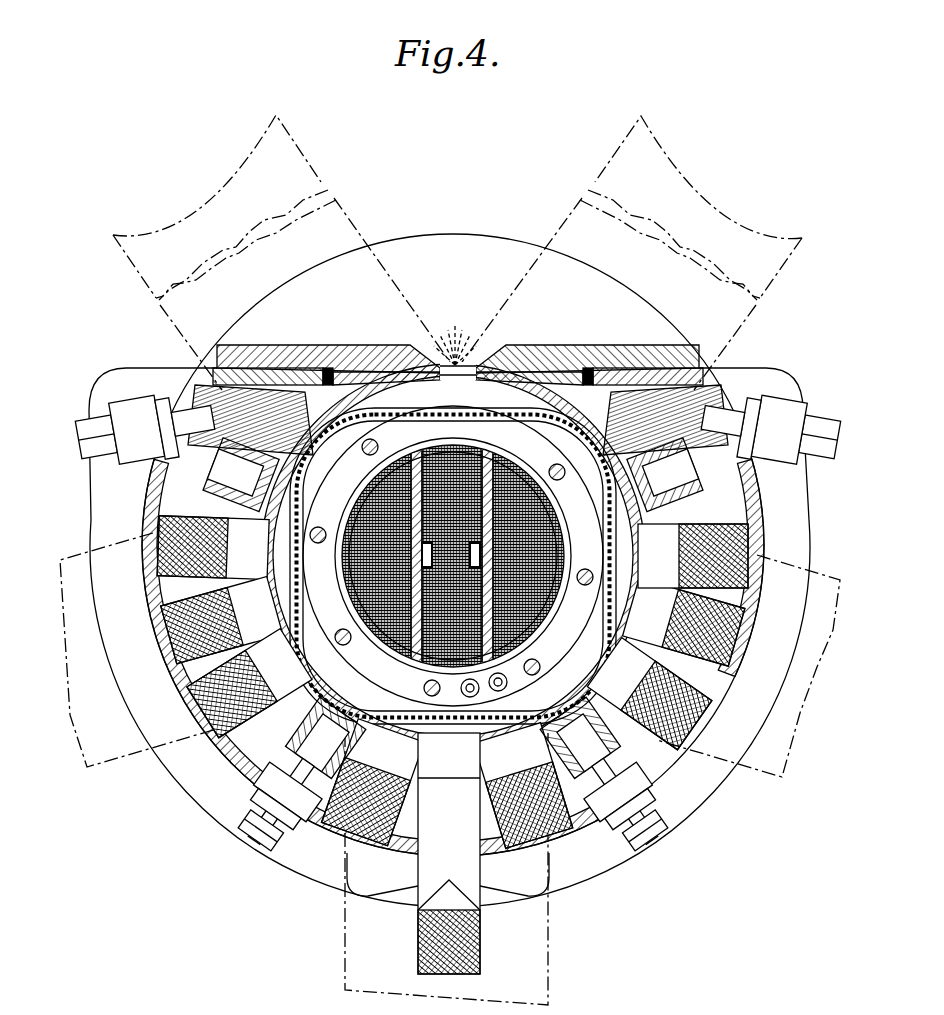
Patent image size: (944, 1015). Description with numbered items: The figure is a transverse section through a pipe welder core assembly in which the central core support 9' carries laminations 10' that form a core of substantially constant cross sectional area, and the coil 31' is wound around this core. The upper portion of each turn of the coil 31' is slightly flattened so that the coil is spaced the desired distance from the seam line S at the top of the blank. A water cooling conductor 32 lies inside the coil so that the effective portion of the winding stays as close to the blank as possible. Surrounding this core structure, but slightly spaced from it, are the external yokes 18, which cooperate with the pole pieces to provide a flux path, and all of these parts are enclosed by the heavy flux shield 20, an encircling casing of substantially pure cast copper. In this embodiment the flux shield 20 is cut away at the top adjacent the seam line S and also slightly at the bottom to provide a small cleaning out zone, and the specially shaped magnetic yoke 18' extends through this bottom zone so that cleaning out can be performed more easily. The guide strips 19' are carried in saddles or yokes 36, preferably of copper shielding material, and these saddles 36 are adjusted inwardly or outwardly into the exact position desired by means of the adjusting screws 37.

The central core support 9' is at (453, 556).
The laminations 10' is at (459, 568).
The external yokes 18 is at (748, 666).
The magnetic yoke 18' is at (448, 853).
The guide strips 19' is at (452, 616).
The flux shield 20 is at (190, 770).
The coil 31' is at (453, 608).
The water cooling conductor 32 is at (505, 462).
The saddles or yokes 36 is at (660, 795).
The adjusting screws 37 is at (645, 868).
The seam line S is at (456, 340).